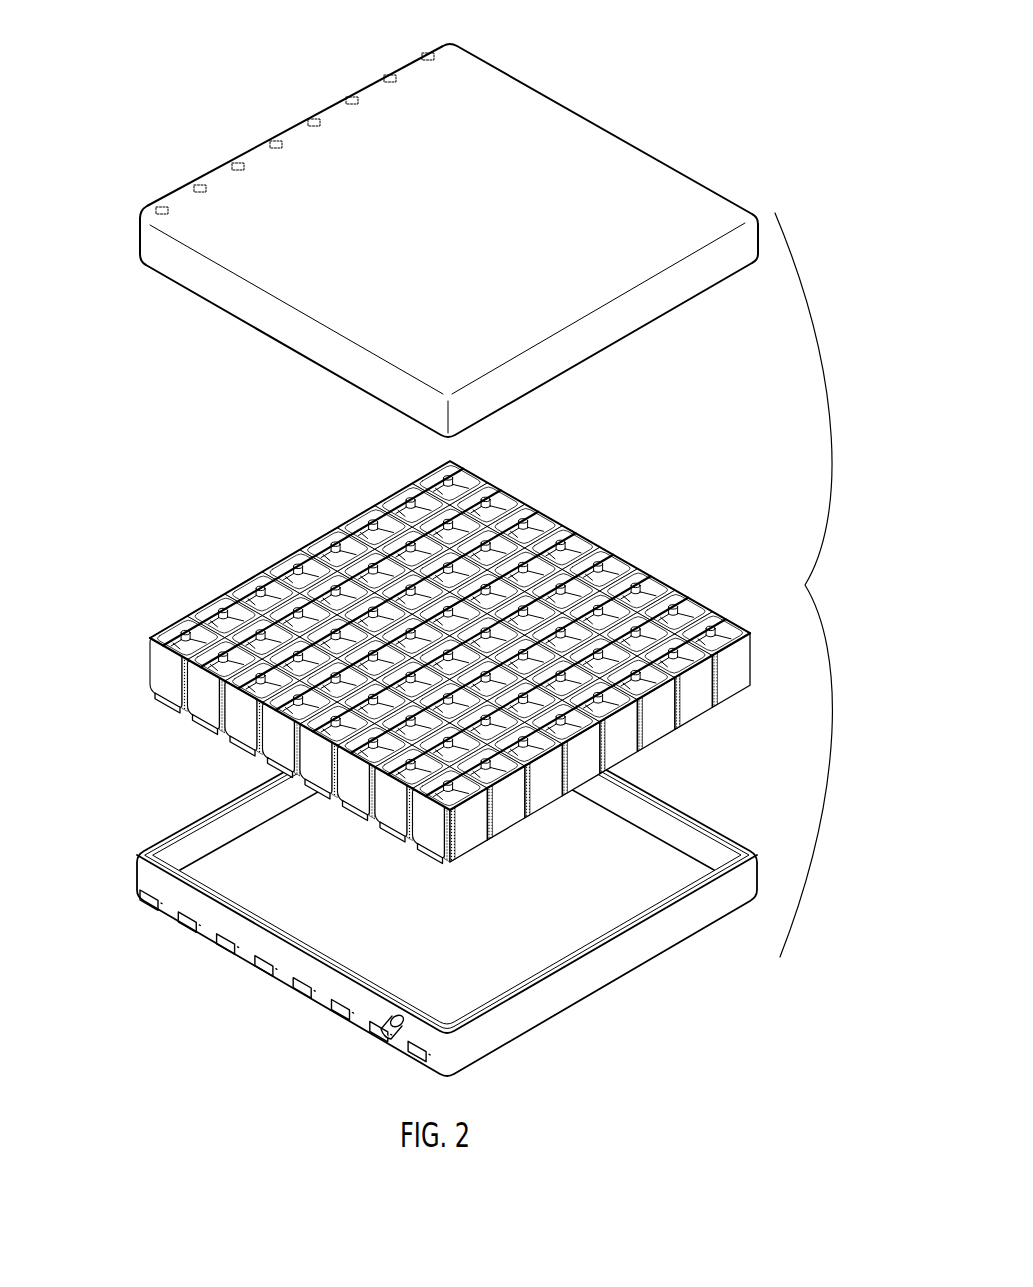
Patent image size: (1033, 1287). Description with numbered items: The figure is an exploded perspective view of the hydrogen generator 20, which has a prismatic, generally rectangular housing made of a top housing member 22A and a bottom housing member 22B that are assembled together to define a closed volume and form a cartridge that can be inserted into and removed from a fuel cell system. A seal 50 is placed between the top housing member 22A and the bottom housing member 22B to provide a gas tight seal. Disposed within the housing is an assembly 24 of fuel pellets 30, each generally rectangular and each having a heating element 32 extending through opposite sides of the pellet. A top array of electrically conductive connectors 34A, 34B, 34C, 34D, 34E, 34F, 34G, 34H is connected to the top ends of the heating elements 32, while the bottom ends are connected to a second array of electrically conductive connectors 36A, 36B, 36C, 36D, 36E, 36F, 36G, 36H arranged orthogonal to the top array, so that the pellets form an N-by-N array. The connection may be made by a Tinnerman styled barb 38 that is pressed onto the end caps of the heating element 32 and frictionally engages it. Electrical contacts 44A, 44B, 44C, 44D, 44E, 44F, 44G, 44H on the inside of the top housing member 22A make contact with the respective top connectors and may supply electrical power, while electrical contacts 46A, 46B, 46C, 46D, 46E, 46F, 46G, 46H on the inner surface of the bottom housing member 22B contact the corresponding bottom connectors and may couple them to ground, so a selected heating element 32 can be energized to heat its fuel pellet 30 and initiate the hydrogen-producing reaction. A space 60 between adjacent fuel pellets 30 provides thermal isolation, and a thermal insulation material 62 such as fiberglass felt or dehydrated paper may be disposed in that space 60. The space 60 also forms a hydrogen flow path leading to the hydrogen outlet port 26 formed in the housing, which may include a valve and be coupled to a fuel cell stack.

The hydrogen generator 20 is at (805, 585).
The top housing member 22A is at (562, 138).
The bottom housing member 22B is at (640, 957).
The assembly 24 is at (136, 657).
The hydrogen outlet port 26 is at (392, 1014).
The fuel pellet 30 is at (176, 682).
The heating element 32 is at (678, 606).
The top electrically conductive connector 34A is at (165, 630).
The top electrically conductive connector 34B is at (203, 608).
The top electrically conductive connector 34C is at (241, 586).
The top electrically conductive connector 34D is at (279, 564).
The top electrically conductive connector 34E is at (317, 542).
The top electrically conductive connector 34F is at (355, 520).
The top electrically conductive connector 34G is at (393, 498).
The top electrically conductive connector 34H is at (431, 476).
The bottom electrically conductive connector 36A is at (165, 702).
The bottom electrically conductive connector 36B is at (203, 724).
The bottom electrically conductive connector 36C is at (240, 746).
The bottom electrically conductive connector 36D is at (278, 768).
The bottom electrically conductive connector 36E is at (308, 794).
The bottom electrically conductive connector 36F is at (346, 815).
The bottom electrically conductive connector 36G is at (384, 837).
The bottom electrically conductive connector 36H is at (422, 859).
The Tinnerman styled barb 38 is at (610, 577).
The electrical contact 44A is at (162, 205).
The electrical contact 44B is at (200, 183).
The electrical contact 44C is at (238, 161).
The electrical contact 44D is at (276, 139).
The electrical contact 44E is at (314, 117).
The electrical contact 44F is at (352, 95).
The electrical contact 44G is at (390, 73).
The electrical contact 44H is at (428, 51).
The electrical contact 46A is at (140, 901).
The electrical contact 46B is at (178, 923).
The electrical contact 46C is at (216, 945).
The electrical contact 46D is at (254, 967).
The electrical contact 46E is at (293, 989).
The electrical contact 46F is at (331, 1011).
The electrical contact 46G is at (369, 1033).
The electrical contact 46H is at (408, 1053).
The seal 50 is at (716, 831).
The space 60 is at (296, 782).
The thermal insulation material 62 is at (162, 688).